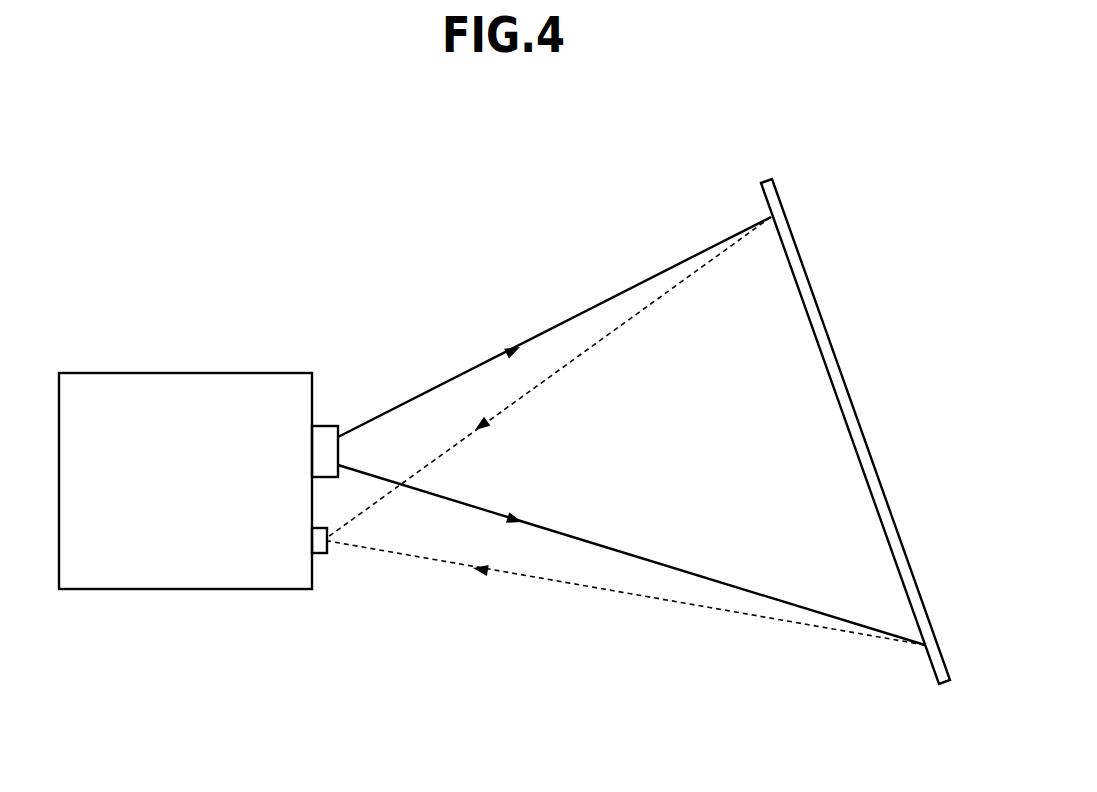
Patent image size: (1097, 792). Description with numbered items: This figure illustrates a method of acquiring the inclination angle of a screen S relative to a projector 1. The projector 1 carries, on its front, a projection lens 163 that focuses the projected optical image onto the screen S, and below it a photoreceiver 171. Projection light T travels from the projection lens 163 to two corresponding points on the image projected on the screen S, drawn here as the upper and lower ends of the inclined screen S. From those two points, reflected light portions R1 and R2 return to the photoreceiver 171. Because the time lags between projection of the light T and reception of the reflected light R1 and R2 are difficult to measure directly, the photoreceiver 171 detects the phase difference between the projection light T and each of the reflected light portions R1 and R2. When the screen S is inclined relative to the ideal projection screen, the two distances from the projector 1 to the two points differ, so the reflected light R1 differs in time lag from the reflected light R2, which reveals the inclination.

The projector 1 is at (285, 373).
The projection lens 163 is at (327, 427).
The photoreceiver 171 is at (318, 556).
The screen S is at (764, 180).
The projection light T is at (631, 431).
The reflected light R1 is at (549, 377).
The reflected light R2 is at (626, 590).